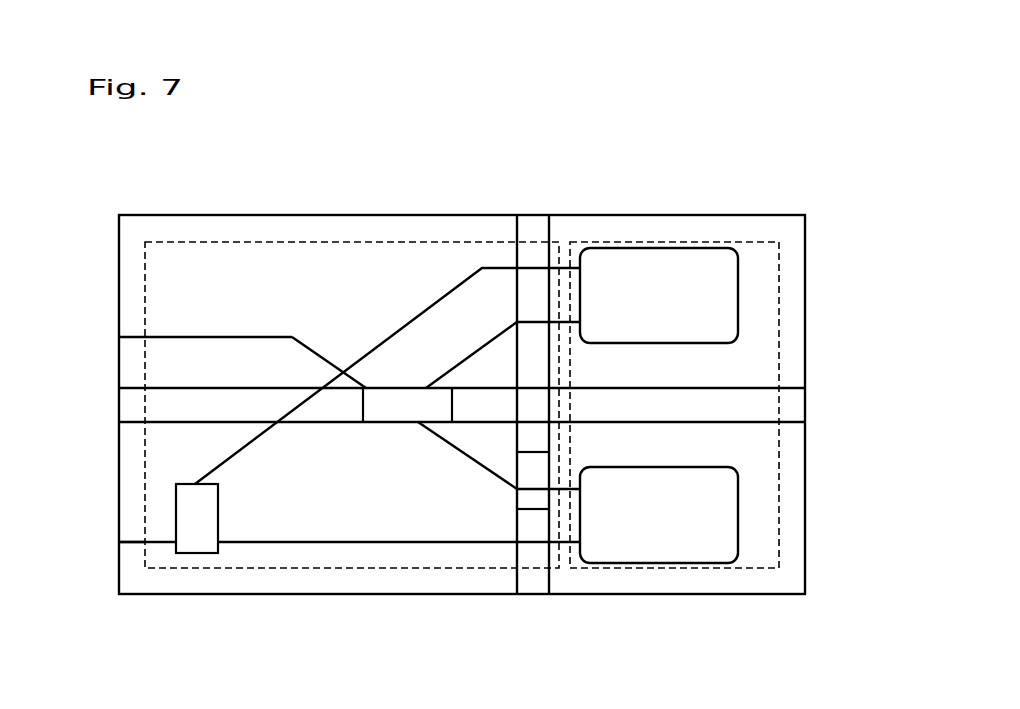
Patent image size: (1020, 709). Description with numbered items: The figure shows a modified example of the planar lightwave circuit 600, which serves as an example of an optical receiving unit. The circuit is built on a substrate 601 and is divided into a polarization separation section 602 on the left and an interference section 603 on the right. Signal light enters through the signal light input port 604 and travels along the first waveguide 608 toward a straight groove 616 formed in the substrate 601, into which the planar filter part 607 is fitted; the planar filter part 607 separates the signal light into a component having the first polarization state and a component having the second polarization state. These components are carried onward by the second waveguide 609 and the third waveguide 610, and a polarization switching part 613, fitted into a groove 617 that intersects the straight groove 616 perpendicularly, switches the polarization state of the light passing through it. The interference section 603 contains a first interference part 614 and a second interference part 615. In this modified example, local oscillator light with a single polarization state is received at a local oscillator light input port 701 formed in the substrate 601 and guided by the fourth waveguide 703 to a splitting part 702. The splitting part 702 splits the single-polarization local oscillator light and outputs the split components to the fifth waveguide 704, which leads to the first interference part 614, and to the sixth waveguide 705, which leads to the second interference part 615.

The planar lightwave circuit 600 is at (481, 181).
The substrate 601 is at (192, 215).
The polarization separation section 602 is at (395, 230).
The interference section 603 is at (756, 240).
The signal light input port 604 is at (119, 337).
The planar filter part 607 is at (378, 413).
The first waveguide 608 is at (247, 335).
The second waveguide 609 is at (485, 342).
The third waveguide 610 is at (460, 453).
The polarization switching part 613 is at (523, 499).
The first interference part 614 is at (738, 288).
The second interference part 615 is at (738, 510).
The straight groove 616 is at (123, 404).
The groove 617 is at (533, 596).
The local oscillator light input port 701 is at (119, 542).
The splitting part 702 is at (200, 554).
The fourth waveguide 703 is at (131, 544).
The fifth waveguide 704 is at (382, 341).
The sixth waveguide 705 is at (257, 541).